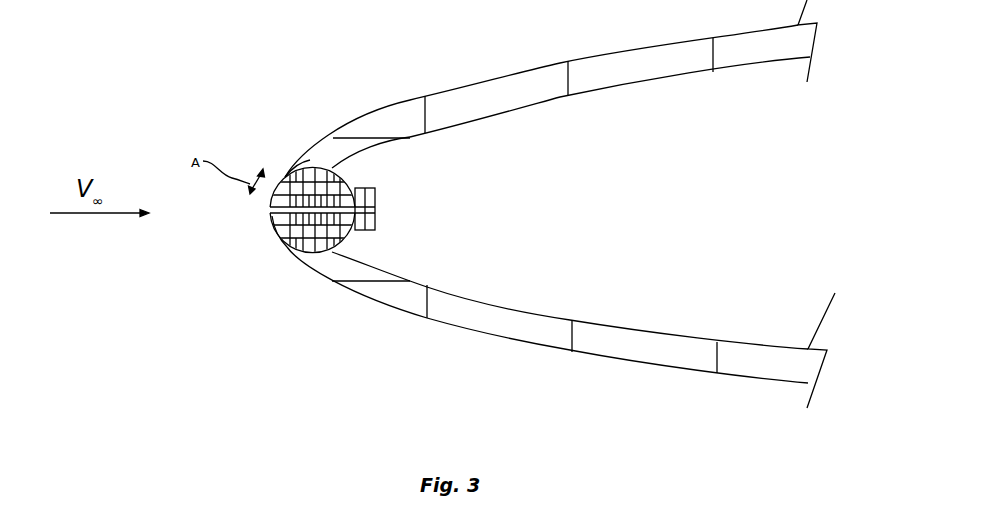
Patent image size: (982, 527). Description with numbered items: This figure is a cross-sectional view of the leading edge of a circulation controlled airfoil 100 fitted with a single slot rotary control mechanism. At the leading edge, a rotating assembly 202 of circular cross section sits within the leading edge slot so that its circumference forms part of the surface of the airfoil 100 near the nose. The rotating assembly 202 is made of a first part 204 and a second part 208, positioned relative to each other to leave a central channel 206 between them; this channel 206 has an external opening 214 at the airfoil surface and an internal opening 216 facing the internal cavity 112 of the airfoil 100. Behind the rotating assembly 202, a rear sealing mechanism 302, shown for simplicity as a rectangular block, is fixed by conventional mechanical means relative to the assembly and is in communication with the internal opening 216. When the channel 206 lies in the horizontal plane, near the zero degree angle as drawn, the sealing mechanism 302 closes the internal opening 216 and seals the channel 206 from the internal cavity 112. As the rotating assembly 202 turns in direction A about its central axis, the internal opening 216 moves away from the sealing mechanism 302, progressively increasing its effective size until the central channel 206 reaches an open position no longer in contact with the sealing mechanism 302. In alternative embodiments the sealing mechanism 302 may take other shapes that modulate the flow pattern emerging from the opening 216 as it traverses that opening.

The circulation controlled airfoil 100 is at (542, 68).
The internal cavity 112 is at (664, 216).
The rotating assembly 202 is at (285, 178).
The first part 204 is at (325, 199).
The central channel 206 is at (272, 216).
The second part 208 is at (325, 240).
The external opening 214 is at (318, 210).
The internal opening 216 is at (362, 186).
The sealing mechanism 302 is at (378, 209).